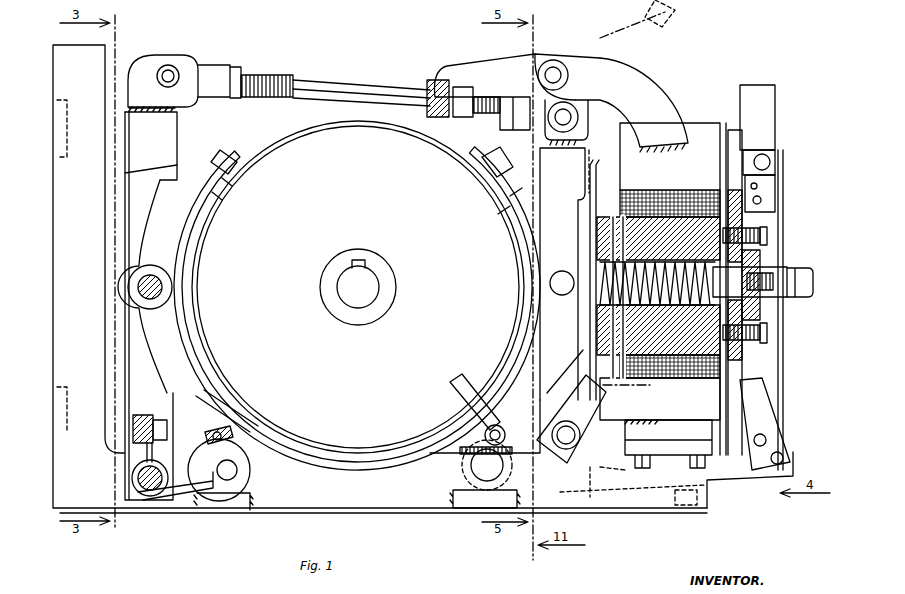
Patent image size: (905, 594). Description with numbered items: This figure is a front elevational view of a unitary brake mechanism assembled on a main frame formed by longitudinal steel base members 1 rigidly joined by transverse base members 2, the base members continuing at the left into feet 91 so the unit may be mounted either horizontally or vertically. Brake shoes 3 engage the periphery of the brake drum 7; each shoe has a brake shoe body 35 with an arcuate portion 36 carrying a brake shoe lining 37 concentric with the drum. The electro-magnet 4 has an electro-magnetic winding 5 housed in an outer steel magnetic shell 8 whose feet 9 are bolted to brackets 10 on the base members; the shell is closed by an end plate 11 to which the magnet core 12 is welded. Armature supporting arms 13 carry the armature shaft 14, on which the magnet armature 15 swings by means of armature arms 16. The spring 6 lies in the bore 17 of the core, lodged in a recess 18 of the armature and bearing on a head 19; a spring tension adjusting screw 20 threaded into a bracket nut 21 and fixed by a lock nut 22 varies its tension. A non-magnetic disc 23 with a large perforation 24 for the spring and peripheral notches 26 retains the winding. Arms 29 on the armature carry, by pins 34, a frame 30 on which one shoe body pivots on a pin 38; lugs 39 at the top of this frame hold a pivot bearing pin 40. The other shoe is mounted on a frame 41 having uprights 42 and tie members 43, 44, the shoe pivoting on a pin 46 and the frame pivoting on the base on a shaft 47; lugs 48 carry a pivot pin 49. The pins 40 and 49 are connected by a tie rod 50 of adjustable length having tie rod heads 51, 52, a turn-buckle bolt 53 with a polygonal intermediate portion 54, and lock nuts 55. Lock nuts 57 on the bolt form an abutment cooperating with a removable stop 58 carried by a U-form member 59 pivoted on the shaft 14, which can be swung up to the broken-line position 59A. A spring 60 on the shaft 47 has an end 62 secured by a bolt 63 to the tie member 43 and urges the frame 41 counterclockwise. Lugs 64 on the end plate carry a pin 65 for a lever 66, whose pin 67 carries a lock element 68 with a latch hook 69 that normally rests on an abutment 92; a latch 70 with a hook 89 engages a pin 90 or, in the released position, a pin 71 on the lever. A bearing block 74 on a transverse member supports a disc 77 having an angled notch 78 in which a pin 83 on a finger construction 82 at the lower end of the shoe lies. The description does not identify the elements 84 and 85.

The longitudinal base members 1 is at (380, 279).
The transverse base members 2 is at (252, 505).
The brake shoes 3 is at (522, 350).
The electro-magnet 4 is at (658, 289).
The electro-magnetic winding 5 is at (672, 196).
The spring 6 is at (597, 325).
The brake drum 7 is at (355, 455).
The magnetic shell 8 is at (648, 400).
The feet 9 is at (692, 418).
The brackets 10 is at (668, 444).
The end plate 11 is at (728, 135).
The magnet core 12 is at (597, 343).
The armature supporting arms 13 is at (655, 92).
The armature shaft 14 is at (553, 65).
The magnet armature 15 is at (597, 238).
The armature arms 16 is at (612, 98).
The bore 17 is at (600, 250).
The recess 18 is at (600, 262).
The head 19 is at (752, 265).
The spring tension adjusting screw 20 is at (803, 298).
The bracket nut 21 is at (775, 312).
The lock nut 22 is at (775, 268).
The non-magnetic metal disc 23 is at (635, 385).
The perforation 24 is at (597, 308).
The notches 26 is at (597, 226).
The arms 29 is at (568, 370).
The frame 30 is at (564, 274).
The pins 34 is at (570, 422).
The brake shoe body 35 is at (205, 207).
The arcuate portion 36 is at (232, 186).
The brake shoe lining 37 is at (245, 165).
The pin 38 is at (560, 290).
The lugs 39 is at (584, 130).
The pivot bearing pin 40 is at (580, 106).
The frame 41 is at (178, 140).
The uprights 42 is at (178, 125).
The tie member 43 is at (139, 397).
The tie member 44 is at (178, 112).
The pin 46 is at (165, 287).
The shaft 47 is at (138, 478).
The lugs 48 is at (163, 81).
The pivot pin 49 is at (170, 66).
The tie rod 50 is at (300, 86).
The tie rod head 51 is at (203, 63).
The tie rod head 52 is at (555, 162).
The turn-buckle bolt 53 is at (365, 93).
The intermediate portion 54 is at (327, 88).
The lock nuts 55 is at (240, 68).
The lock nuts 57 is at (455, 115).
The stop 58 is at (432, 85).
The U-form member 59 is at (472, 70).
The raised position of U-form member 59A is at (612, 28).
The spring 60 is at (150, 492).
The spring end portion 62 is at (190, 500).
The bolt 63 is at (155, 420).
The lugs 64 is at (748, 408).
The pivot bearing pin 65 is at (767, 440).
The lever 66 is at (776, 95).
The pin 67 is at (784, 458).
The lock element 68 is at (736, 480).
The latch hook 69 is at (565, 490).
The latch 70 is at (768, 187).
The pin 71 is at (776, 162).
The bearing block 74 is at (252, 487).
The disc 77 is at (462, 449).
The notch 78 is at (252, 420).
The finger construction 82 is at (204, 413).
The pin 83 is at (212, 435).
The band end 84 is at (250, 408).
The pin 85 is at (205, 440).
The latch hook 89 is at (772, 208).
The pin 90 is at (770, 195).
The feet 91 is at (55, 268).
The abutment 92 is at (685, 505).